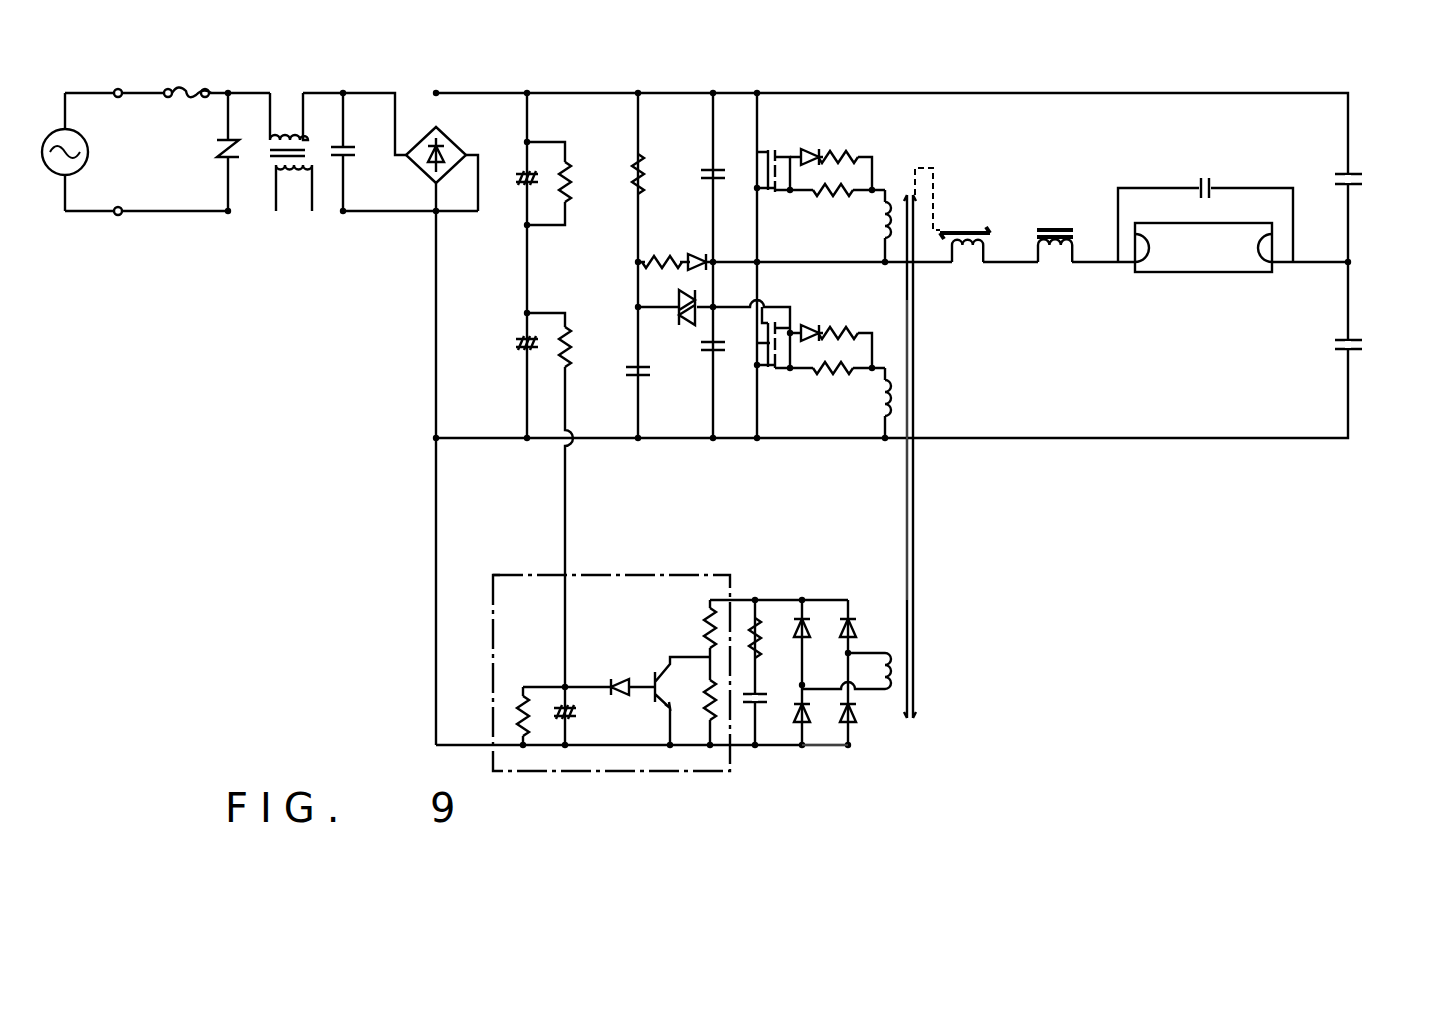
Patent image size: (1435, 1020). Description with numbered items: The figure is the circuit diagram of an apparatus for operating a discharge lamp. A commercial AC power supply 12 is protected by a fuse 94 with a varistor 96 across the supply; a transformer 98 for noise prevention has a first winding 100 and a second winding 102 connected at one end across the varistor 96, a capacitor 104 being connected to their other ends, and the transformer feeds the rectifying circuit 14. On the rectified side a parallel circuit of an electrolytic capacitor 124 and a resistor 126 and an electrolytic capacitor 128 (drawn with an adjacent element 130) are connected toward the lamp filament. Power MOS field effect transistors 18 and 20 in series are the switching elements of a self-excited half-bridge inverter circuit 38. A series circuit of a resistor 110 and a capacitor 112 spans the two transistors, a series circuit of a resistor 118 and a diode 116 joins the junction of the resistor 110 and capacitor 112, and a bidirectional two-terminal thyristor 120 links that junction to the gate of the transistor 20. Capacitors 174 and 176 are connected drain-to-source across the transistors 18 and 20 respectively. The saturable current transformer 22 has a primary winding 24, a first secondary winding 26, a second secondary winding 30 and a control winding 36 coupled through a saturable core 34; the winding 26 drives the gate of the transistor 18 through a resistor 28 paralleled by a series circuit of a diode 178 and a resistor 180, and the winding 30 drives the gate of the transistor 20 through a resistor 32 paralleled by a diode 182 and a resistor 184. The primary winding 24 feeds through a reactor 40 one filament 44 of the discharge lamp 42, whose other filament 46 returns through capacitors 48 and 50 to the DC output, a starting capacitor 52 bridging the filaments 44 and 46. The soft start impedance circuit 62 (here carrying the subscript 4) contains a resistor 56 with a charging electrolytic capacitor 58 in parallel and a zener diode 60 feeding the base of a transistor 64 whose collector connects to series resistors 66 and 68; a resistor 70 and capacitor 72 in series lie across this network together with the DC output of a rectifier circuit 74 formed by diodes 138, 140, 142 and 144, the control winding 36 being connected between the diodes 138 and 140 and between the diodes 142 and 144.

The commercial AC power supply 12 is at (47, 130).
The fuse 94 is at (193, 87).
The varistor 96 is at (218, 153).
The first winding 100 is at (285, 130).
The transformer for noise prevention 98 is at (268, 158).
The second winding 102 is at (293, 168).
The capacitor 104 is at (350, 158).
The rectifying circuit 14 is at (505, 133).
The electrolytic capacitor 124 is at (515, 183).
The resistor 126 is at (577, 185).
The electrolytic capacitor 128 is at (523, 340).
The resistor 130 is at (573, 347).
The resistor 110 is at (647, 158).
The resistor 118 is at (653, 252).
The diode 116 is at (693, 255).
The capacitor 174 is at (707, 170).
The bidirectional two-terminal thyristor 120 is at (678, 325).
The capacitor 112 is at (633, 377).
The capacitor 176 is at (703, 358).
The field effect transistor 18 is at (777, 152).
The diode 178 is at (807, 148).
The resistor 180 is at (855, 152).
The resistor 28 is at (832, 195).
The first secondary winding 26 is at (893, 213).
The field effect transistor 20 is at (772, 372).
The diode 182 is at (807, 322).
The resistor 184 is at (850, 330).
The resistor 32 is at (833, 375).
The second secondary winding 30 is at (907, 397).
The saturable core 34 is at (915, 475).
The saturable current transformer 22 is at (903, 500).
The inverter circuit 38 is at (895, 285).
The primary winding 24 is at (972, 262).
The reactor 40 is at (1057, 262).
The discharge lamp 42 is at (1202, 272).
The filament 44 is at (1145, 262).
The filament 46 is at (1262, 265).
The starting capacitor 52 is at (1198, 182).
The capacitor 48 is at (1355, 172).
The capacitor 50 is at (1352, 338).
The impedance circuit 62 is at (518, 573).
The control circuit block 4 is at (517, 548).
The resistor 56 is at (520, 717).
The electrolytic capacitor 58 is at (572, 715).
The zener diode 60 is at (623, 680).
The transistor 64 is at (657, 677).
The resistor 66 is at (707, 628).
The resistor 68 is at (707, 707).
The resistor 70 is at (762, 635).
The capacitor 72 is at (748, 710).
The diode 138 is at (815, 623).
The diode 140 is at (795, 725).
The diode 142 is at (855, 635).
The diode 144 is at (853, 713).
The control winding 36 is at (898, 667).
The rectifier circuit 74 is at (825, 712).